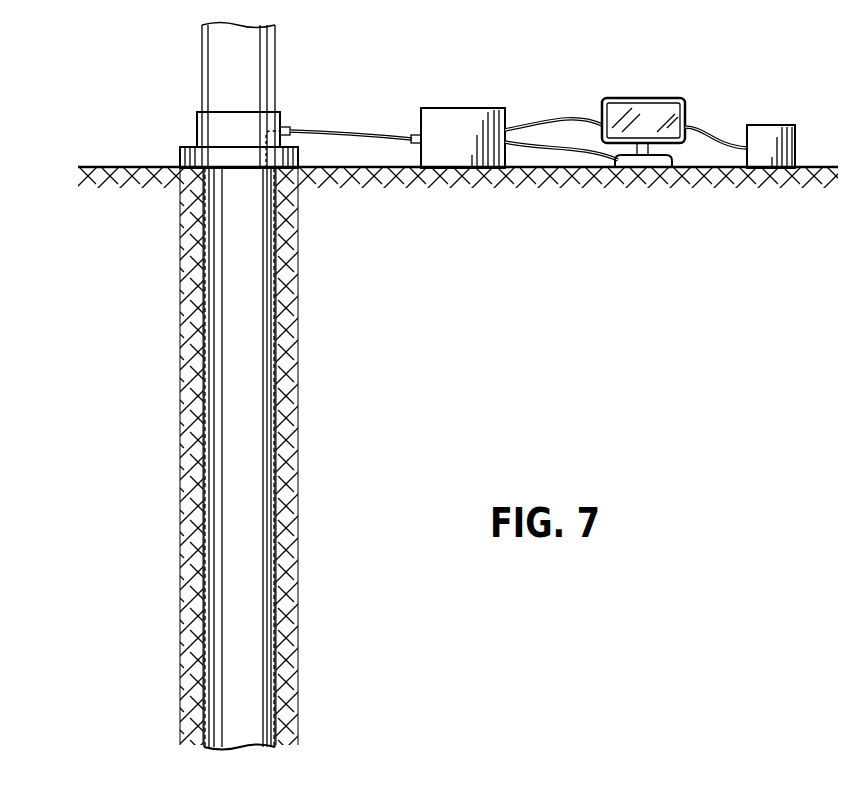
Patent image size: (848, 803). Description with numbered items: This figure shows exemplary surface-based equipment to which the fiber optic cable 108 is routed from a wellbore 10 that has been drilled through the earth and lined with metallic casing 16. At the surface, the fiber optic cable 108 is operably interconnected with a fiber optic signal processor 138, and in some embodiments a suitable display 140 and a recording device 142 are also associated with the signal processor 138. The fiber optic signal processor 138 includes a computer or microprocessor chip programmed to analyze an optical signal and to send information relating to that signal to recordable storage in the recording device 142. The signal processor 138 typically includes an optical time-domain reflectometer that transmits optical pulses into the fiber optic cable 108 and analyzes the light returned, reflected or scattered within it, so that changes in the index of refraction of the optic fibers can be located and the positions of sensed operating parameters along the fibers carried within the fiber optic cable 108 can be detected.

The wellbore 10 is at (199, 443).
The casing 16 is at (275, 390).
The fiber optic cable 108 is at (265, 297).
The fiber optic signal processor 138 is at (462, 110).
The display 140 is at (640, 100).
The recording device 142 is at (765, 125).